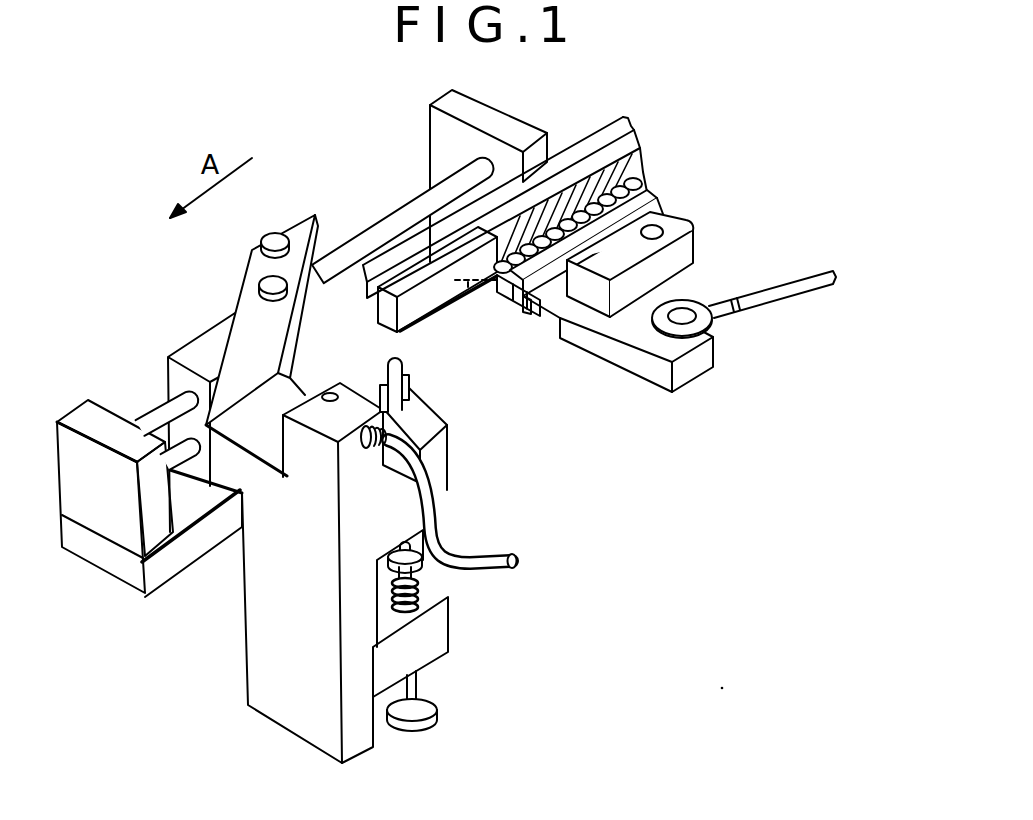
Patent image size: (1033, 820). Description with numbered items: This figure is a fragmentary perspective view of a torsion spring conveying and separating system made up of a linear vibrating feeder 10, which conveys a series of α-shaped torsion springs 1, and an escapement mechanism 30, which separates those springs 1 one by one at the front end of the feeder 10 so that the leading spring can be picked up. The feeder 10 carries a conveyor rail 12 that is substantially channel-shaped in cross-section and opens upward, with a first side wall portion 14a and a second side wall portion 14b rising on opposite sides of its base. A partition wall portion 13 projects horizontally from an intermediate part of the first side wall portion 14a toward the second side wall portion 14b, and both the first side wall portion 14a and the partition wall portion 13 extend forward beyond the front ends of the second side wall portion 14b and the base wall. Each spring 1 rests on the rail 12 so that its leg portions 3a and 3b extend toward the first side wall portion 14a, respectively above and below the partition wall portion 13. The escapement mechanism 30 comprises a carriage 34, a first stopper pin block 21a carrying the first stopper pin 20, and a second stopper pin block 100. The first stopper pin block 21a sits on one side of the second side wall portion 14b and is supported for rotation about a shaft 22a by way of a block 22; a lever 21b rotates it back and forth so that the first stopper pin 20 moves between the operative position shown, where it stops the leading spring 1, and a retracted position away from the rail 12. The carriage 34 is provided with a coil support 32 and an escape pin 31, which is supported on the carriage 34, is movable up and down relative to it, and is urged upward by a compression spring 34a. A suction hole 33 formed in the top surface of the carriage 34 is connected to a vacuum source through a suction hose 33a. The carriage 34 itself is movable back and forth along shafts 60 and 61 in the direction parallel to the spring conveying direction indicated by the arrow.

The α-shaped torsion spring 1 is at (492, 180).
The leg portion 3a is at (633, 165).
The leg portion 3b is at (470, 292).
The linear vibrating feeder 10 is at (670, 130).
The conveyor rail 12 is at (495, 306).
The partition wall portion 13 is at (440, 307).
The first side wall portion 14a is at (593, 142).
The second side wall portion 14b is at (655, 190).
The first stopper pin 20 is at (510, 302).
The first stopper pin block 21a is at (648, 367).
The lever 21b is at (767, 313).
The block 22 is at (692, 253).
The shaft 22a is at (660, 227).
The escapement mechanism 30 is at (451, 766).
The escape pin 31 is at (443, 413).
The coil support 32 is at (410, 387).
The suction hole 33 is at (345, 385).
The suction hose 33a is at (502, 568).
The carriage 34 is at (278, 697).
The compression spring 34a is at (433, 610).
The shaft 60 is at (178, 445).
The shaft 61 is at (393, 214).
The second stopper pin block 100 is at (527, 312).